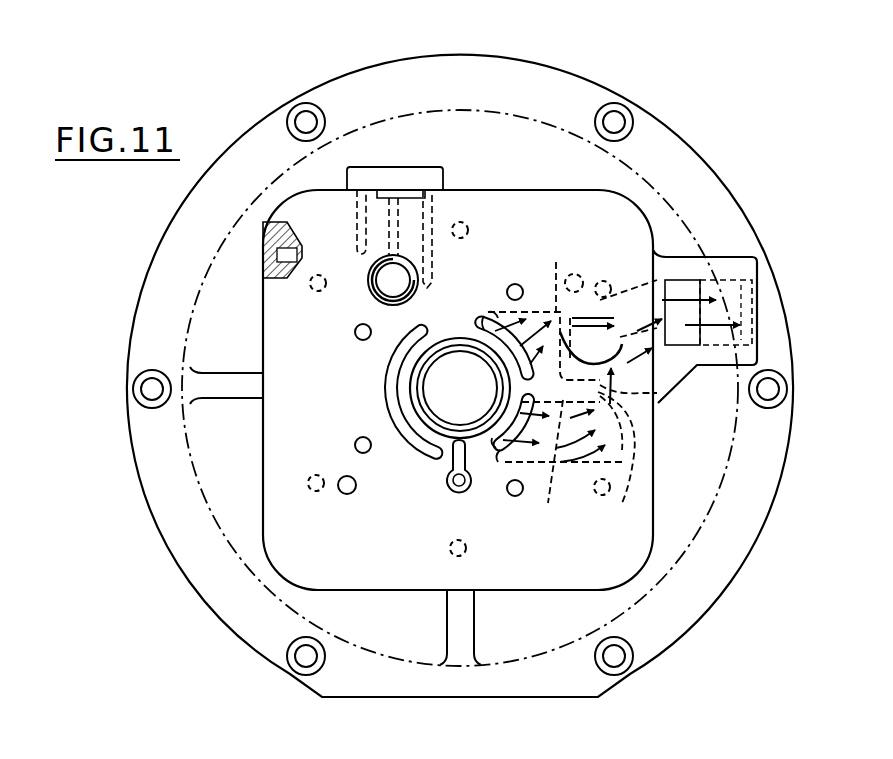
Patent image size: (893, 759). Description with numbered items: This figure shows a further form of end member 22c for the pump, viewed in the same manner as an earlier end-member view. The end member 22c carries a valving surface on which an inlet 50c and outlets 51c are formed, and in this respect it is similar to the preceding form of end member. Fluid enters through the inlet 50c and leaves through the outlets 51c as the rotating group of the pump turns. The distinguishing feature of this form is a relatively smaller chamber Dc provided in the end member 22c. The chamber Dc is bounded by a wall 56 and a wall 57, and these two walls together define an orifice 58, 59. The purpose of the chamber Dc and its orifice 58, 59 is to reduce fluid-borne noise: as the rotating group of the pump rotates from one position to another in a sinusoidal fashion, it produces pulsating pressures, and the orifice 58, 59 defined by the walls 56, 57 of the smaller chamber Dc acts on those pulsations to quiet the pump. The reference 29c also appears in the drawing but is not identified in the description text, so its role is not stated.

The end member 22c is at (586, 104).
The pump body 29c is at (645, 545).
The inlet 50c is at (398, 413).
The outlets 51c is at (490, 320).
The wall 56 is at (563, 468).
The wall 57 is at (611, 342).
The orifice 58 is at (642, 423).
The orifice 59 is at (544, 307).
The chamber Dc is at (617, 466).